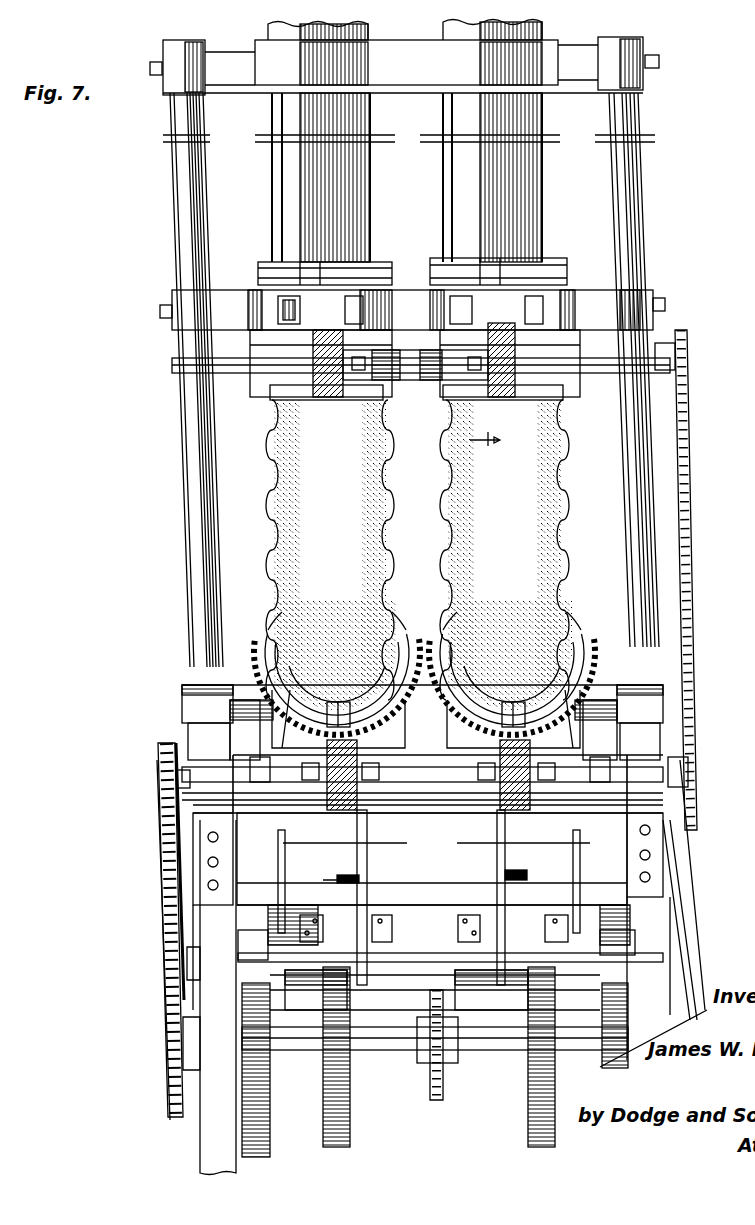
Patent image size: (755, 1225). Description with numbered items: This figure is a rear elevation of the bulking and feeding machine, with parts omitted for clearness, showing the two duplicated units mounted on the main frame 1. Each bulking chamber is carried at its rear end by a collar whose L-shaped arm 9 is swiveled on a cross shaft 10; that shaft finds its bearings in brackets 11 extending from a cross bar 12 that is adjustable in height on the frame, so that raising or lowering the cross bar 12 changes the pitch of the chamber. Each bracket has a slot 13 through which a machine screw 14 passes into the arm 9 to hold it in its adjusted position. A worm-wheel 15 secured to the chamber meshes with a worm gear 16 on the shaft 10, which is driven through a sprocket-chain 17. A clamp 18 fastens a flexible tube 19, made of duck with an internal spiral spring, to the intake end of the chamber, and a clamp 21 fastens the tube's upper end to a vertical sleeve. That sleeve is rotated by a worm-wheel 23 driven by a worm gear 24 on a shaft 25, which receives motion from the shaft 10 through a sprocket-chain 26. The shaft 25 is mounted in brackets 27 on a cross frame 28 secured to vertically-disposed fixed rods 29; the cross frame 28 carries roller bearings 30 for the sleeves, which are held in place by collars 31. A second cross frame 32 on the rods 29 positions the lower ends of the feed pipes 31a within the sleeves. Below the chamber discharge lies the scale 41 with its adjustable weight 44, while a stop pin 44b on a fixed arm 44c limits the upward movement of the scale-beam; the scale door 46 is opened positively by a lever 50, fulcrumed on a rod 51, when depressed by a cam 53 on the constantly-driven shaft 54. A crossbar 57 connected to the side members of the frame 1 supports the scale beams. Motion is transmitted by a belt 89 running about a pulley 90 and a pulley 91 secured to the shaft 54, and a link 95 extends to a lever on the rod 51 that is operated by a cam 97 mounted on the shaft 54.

The main frame 1 is at (230, 1090).
The L-shaped arm 9 is at (426, 691).
The cross shaft 10 is at (416, 767).
The brackets 11 is at (253, 762).
The cross bar 12 is at (428, 784).
The slot 13 is at (488, 170).
The machine screw 14 is at (232, 755).
The worm-wheel 15 is at (392, 712).
The worm gear 16 is at (358, 815).
The sprocket-chain 17 is at (170, 903).
The clamp 18 is at (450, 625).
The flexible tube 19 is at (438, 535).
The clamp 21 is at (270, 398).
The worm-wheel 23 is at (395, 378).
The worm gear 24 is at (313, 355).
The shaft 25 is at (232, 364).
The sprocket-chain 26 is at (690, 435).
The brackets 27 is at (255, 335).
The cross frame 28 is at (228, 290).
The fixed rods 29 is at (190, 528).
The roller bearings 30 is at (598, 301).
The collars 31 is at (284, 272).
The feed pipes 31a is at (560, 216).
The second cross frame 32 is at (571, 52).
The scale 41 is at (340, 865).
The adjustable weight 44 is at (337, 878).
The stop pin 44b is at (538, 859).
The fixed arm 44c is at (360, 830).
The scale door 46 is at (435, 990).
The lever 50 is at (255, 915).
The rod 51 is at (428, 955).
The cam 53 is at (268, 1094).
The constantly-driven shaft 54 is at (492, 1047).
The crossbar 57 is at (425, 887).
The belt 89 is at (163, 930).
The pulley 90 is at (160, 818).
The pulley 91 is at (168, 995).
The link 95 is at (278, 853).
The cam 97 is at (350, 1093).